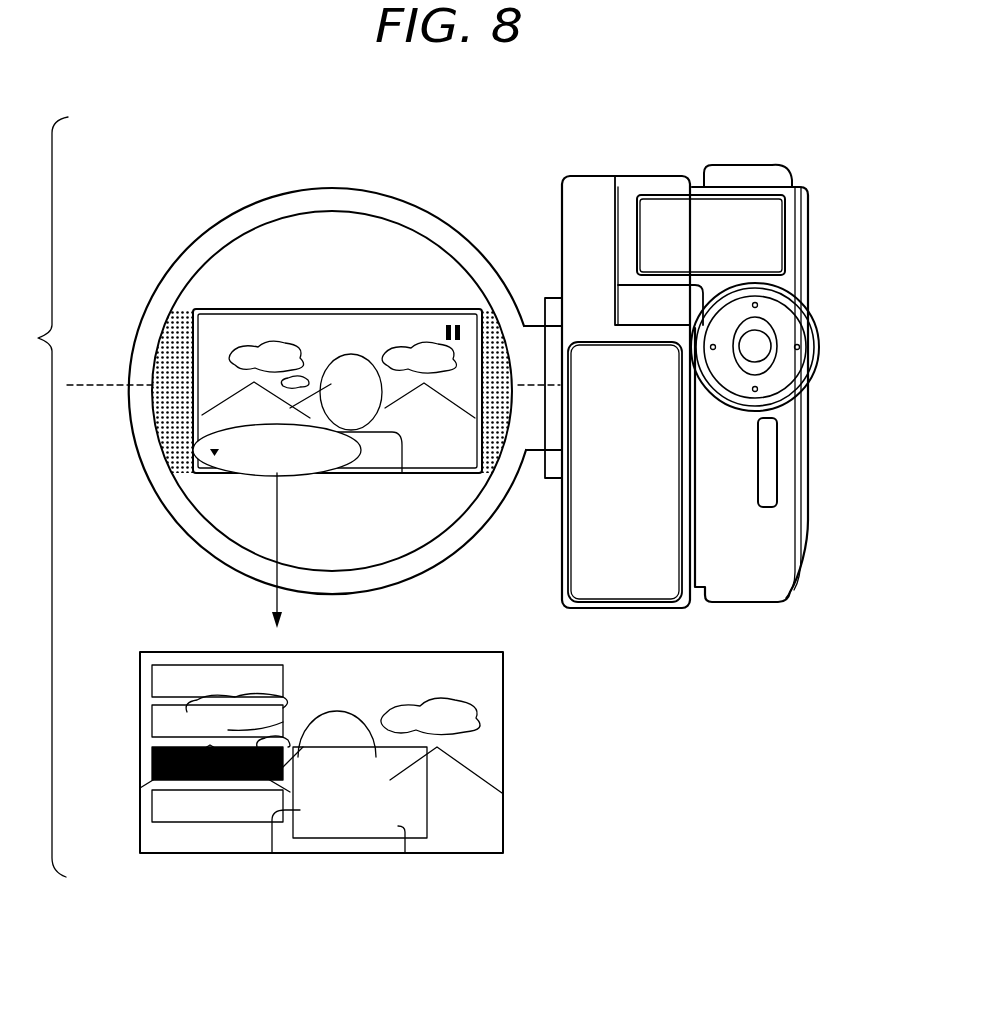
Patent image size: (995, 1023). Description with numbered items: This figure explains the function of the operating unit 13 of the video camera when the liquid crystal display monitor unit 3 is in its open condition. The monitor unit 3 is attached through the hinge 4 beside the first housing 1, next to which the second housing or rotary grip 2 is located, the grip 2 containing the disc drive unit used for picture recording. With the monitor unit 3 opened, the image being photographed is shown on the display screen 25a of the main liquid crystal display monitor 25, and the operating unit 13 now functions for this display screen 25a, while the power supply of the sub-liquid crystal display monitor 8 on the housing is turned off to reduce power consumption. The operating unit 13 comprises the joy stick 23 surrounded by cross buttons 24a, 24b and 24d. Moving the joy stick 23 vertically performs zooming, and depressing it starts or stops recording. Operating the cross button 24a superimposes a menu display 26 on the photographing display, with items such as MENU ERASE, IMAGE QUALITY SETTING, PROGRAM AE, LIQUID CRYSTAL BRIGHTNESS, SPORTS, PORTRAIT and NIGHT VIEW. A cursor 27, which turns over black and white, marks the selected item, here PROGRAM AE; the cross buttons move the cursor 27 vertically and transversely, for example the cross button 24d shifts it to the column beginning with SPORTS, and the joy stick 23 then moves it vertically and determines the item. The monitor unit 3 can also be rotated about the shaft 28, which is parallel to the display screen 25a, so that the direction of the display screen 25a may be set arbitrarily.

The first housing 1 is at (581, 178).
The second housing (grip unit) 2 is at (808, 514).
The liquid crystal display monitor unit 3 is at (344, 200).
The hinge 4 is at (553, 299).
The liquid crystal display monitor 8 is at (773, 218).
The operating unit 13 is at (790, 332).
The joy stick 23 is at (760, 337).
The cross button 24a is at (758, 389).
The cross button 24b is at (710, 348).
The cross button 24d is at (755, 303).
The main liquid crystal display monitor 25 is at (252, 244).
The display screen 25a is at (222, 310).
The menu display 26 is at (300, 703).
The cursor 27 is at (150, 754).
The shaft 28 is at (90, 384).